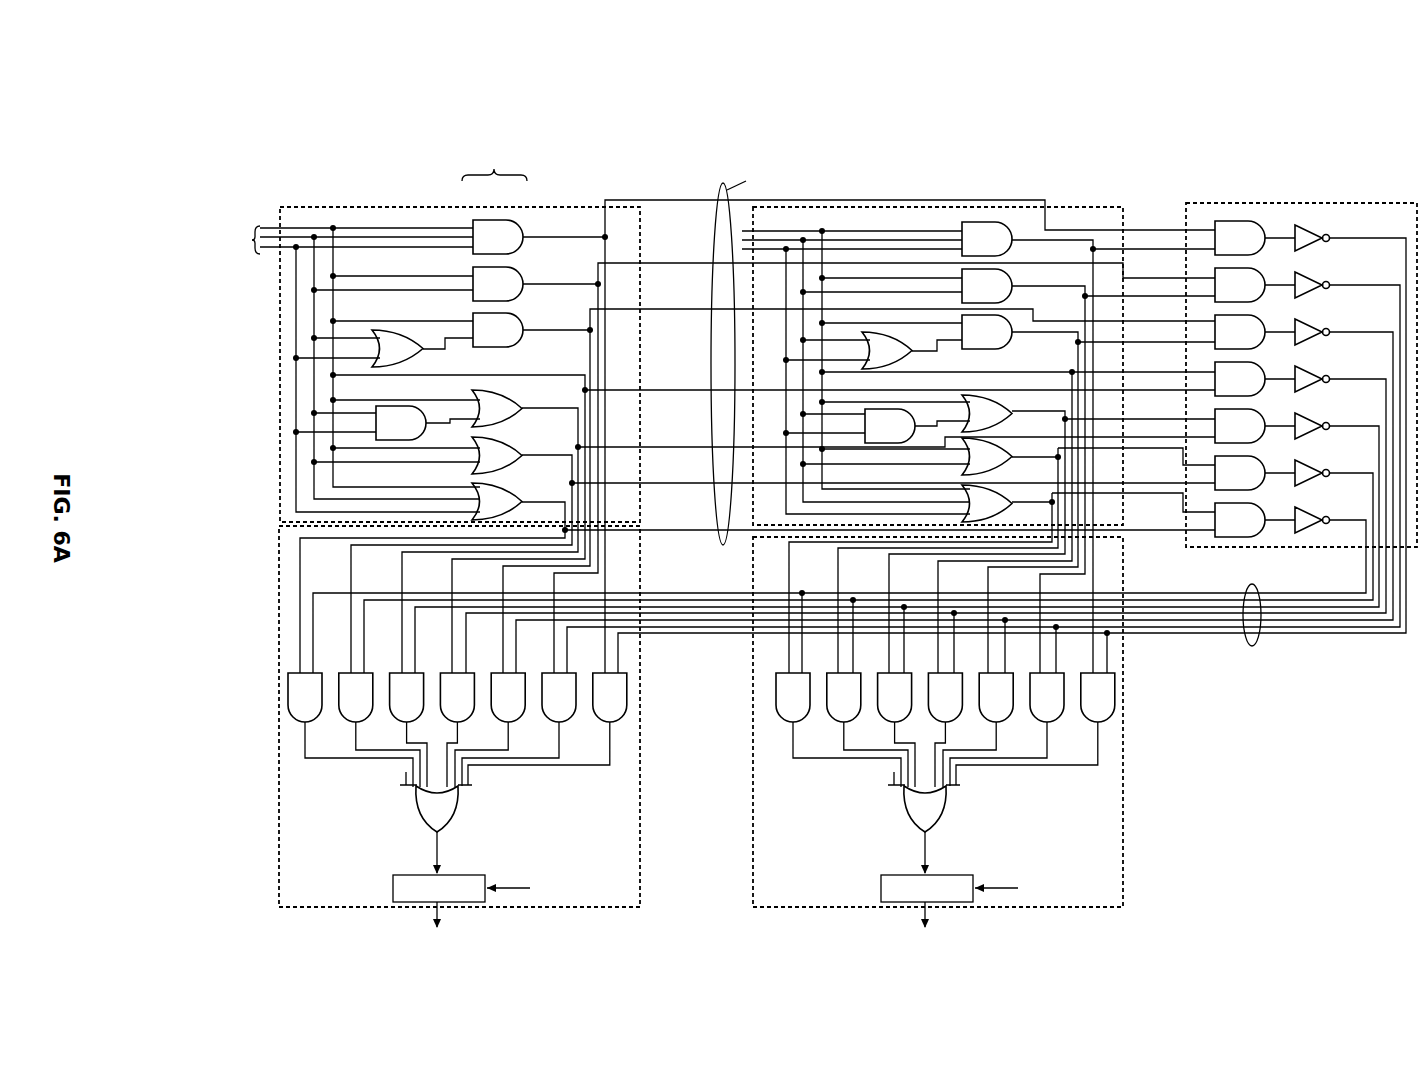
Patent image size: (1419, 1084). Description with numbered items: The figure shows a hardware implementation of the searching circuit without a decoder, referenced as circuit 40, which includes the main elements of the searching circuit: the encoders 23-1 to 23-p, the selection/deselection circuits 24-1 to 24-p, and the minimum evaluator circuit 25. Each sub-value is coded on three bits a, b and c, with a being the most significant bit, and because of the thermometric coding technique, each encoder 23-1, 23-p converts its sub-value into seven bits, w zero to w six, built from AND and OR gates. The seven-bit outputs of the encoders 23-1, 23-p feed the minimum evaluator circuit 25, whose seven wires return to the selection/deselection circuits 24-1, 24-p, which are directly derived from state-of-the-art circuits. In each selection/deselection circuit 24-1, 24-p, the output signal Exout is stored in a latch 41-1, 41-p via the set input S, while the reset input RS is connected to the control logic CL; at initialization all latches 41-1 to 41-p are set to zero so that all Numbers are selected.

The circuit 40 is at (1338, 155).
The encoder 23-1 is at (585, 206).
The encoder 23-p is at (1084, 205).
The minimum evaluator circuit 25 is at (1379, 203).
The selection/deselection circuit 24-1 is at (640, 878).
The selection/deselection circuit 24-p is at (1122, 878).
The latch 41-1 is at (392, 886).
The latch 41-p is at (880, 886).